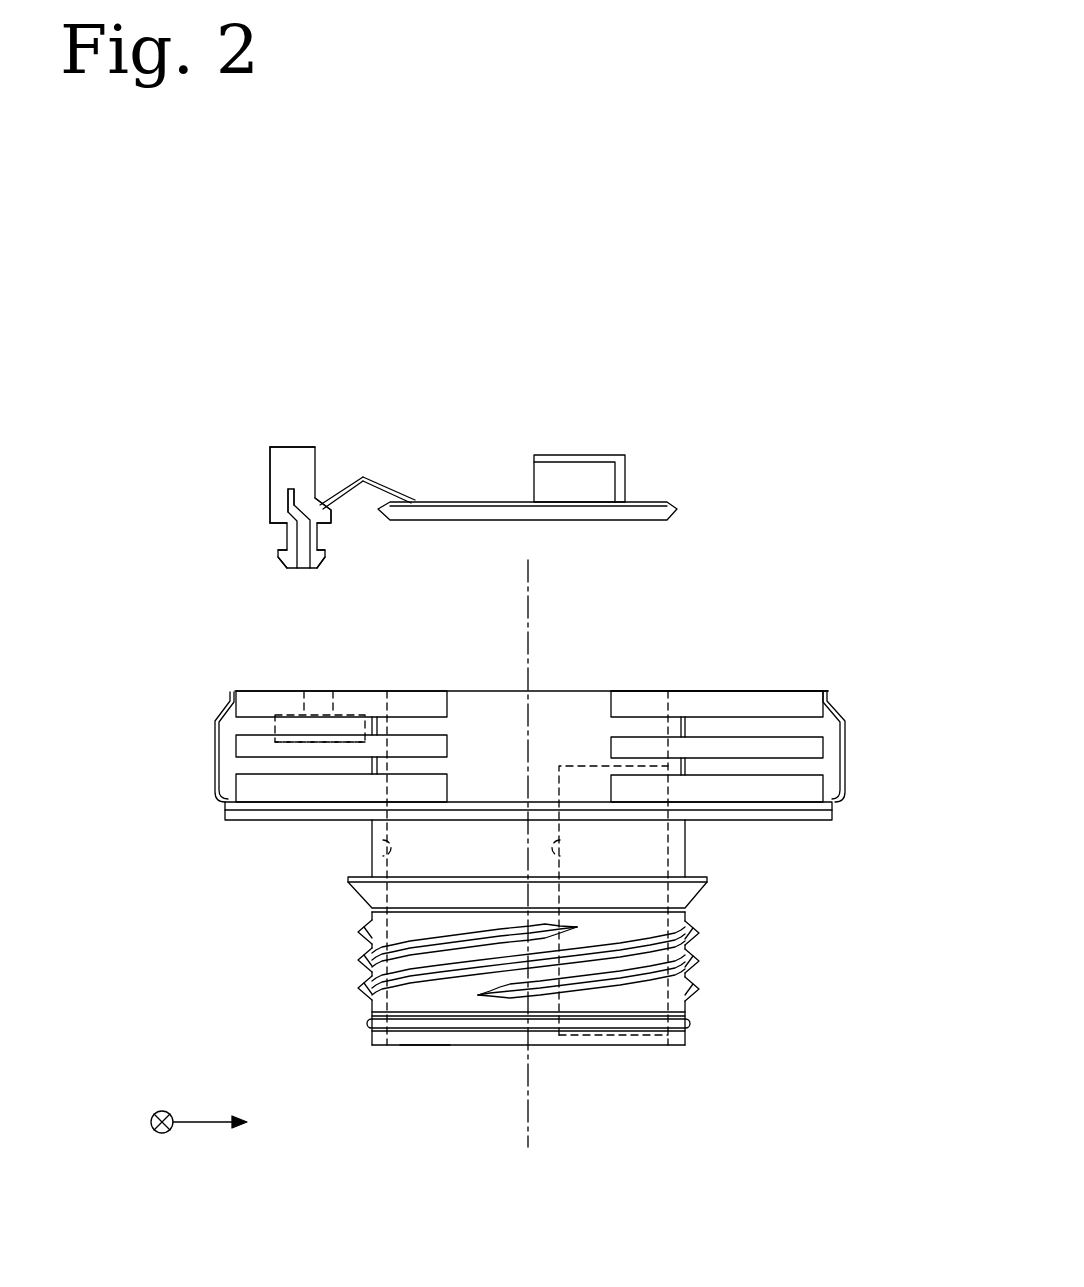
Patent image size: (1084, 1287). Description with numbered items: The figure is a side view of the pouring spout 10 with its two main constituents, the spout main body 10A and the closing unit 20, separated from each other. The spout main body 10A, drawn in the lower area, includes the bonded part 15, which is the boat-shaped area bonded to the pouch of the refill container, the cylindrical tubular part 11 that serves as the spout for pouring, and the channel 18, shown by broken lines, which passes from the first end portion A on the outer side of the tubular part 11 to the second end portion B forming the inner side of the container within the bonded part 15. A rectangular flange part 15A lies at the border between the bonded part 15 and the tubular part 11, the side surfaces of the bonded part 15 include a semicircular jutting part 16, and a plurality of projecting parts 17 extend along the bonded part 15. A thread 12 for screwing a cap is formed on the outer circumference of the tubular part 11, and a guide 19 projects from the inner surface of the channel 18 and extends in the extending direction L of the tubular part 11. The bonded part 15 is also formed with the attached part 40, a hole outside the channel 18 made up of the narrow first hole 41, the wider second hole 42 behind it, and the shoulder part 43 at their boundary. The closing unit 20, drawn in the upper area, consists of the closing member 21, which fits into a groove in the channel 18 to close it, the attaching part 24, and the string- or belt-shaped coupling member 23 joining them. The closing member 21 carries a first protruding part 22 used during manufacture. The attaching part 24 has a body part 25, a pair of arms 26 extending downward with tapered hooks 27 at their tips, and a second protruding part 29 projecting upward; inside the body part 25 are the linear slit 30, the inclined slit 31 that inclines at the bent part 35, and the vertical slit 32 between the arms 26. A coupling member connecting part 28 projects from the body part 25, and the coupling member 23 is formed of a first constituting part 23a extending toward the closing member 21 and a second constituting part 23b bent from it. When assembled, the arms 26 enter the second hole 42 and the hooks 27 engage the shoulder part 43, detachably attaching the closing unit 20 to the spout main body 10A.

The pouring spout 10 is at (468, 362).
The spout main body 10A is at (716, 899).
The tubular part 11 is at (372, 1040).
The thread 12 is at (360, 985).
The bonded part 15 is at (487, 710).
The flange part 15A is at (832, 812).
The jutting part 16 is at (590, 710).
The projecting parts 17 is at (237, 703).
The channel 18 is at (383, 849).
The guide 19 is at (560, 843).
The closing unit 20 is at (550, 480).
The closing member 21 is at (617, 518).
The first protruding part 22 is at (625, 478).
The coupling member 23 is at (395, 446).
The first constituting part 23a is at (345, 483).
The second constituting part 23b is at (393, 491).
The attaching part 24 is at (266, 470).
The body part 25 is at (268, 496).
The arms 26 is at (276, 539).
The hooks 27 is at (278, 557).
The coupling member connecting part 28 is at (332, 522).
The second protruding part 29 is at (279, 447).
The linear slit 30 is at (306, 490).
The inclined slit 31 is at (283, 528).
The vertical slit 32 is at (302, 560).
The bent part 35 is at (288, 517).
The attached part 40 is at (302, 690).
The first hole 41 is at (303, 705).
The second hole 42 is at (295, 742).
The shoulder part 43 is at (347, 713).
The first end portion A is at (735, 692).
The second end portion B is at (425, 1048).
The extending direction L is at (528, 1108).